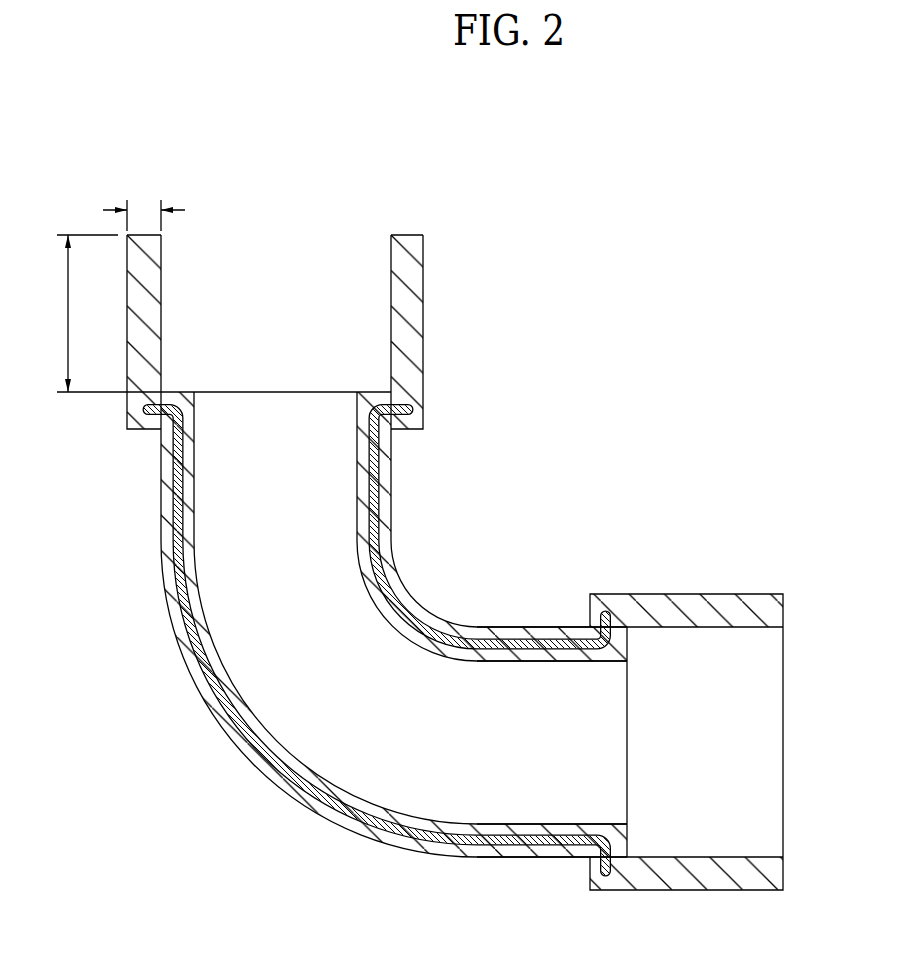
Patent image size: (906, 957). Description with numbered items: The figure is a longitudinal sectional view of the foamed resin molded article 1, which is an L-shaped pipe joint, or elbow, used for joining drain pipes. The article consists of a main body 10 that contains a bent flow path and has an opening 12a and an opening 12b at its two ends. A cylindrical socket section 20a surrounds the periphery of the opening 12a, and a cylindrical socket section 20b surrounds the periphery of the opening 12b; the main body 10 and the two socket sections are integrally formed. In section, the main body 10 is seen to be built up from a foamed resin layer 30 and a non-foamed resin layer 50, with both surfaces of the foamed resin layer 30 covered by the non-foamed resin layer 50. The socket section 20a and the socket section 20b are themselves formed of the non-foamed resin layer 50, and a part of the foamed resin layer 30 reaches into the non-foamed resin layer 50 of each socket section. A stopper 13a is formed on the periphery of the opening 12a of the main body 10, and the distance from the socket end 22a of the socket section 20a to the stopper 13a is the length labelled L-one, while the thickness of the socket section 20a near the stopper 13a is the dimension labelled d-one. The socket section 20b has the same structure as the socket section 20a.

The foamed resin molded article 1 is at (736, 238).
The main body 10 is at (318, 530).
The opening 12a is at (273, 384).
The opening 12b is at (638, 742).
The stopper 13a is at (174, 392).
The socket section 20a is at (353, 333).
The socket section 20b is at (688, 665).
The socket end 22a is at (338, 235).
The foamed resin layer 30 is at (505, 643).
The non-foamed resin layer 50 is at (765, 615).